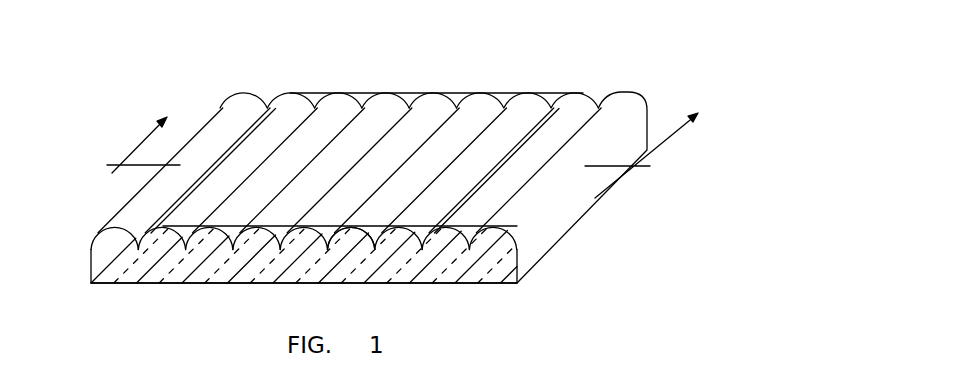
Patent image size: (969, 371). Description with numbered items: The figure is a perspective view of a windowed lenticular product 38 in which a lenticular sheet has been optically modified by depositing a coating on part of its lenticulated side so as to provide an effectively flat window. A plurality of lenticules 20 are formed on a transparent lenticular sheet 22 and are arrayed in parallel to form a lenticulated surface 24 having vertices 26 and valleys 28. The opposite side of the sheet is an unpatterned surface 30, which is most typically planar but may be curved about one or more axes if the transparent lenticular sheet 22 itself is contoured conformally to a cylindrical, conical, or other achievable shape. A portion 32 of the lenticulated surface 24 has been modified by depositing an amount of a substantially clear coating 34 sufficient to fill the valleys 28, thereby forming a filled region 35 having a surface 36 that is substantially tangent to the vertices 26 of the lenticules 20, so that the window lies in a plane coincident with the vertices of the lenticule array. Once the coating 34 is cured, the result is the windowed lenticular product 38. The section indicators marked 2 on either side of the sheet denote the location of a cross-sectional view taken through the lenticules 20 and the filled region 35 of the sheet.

The section line 2- 2 is at (391, 155).
The lenticules 20 is at (133, 212).
The transparent lenticular sheet 22 is at (558, 257).
The lenticulated surface 24 is at (228, 118).
The vertices 26 is at (300, 293).
The valleys 28 is at (192, 240).
The unpatterned surface 30 is at (475, 283).
The portion 32 is at (329, 118).
The coating 34 is at (362, 230).
The filled region 35 is at (410, 231).
The surface 36 is at (433, 108).
The windowed lenticular product 38 is at (532, 62).